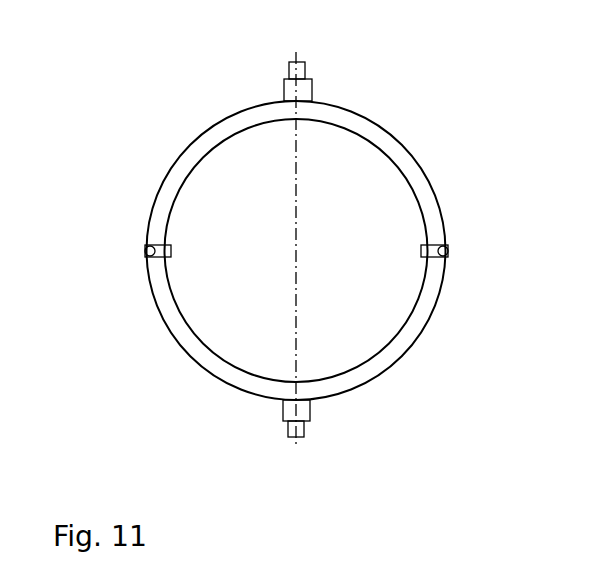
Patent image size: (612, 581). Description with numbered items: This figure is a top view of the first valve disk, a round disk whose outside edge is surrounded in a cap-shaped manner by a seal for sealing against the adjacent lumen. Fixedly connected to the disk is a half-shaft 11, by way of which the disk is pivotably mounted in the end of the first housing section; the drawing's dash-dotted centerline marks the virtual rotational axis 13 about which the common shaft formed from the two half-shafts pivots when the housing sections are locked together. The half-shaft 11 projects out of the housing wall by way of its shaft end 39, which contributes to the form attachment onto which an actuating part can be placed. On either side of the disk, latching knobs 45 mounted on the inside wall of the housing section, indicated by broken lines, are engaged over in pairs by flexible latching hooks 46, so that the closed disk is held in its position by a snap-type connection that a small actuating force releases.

The half-shaft 11 is at (307, 83).
The virtual rotational axis 13 is at (294, 189).
The latching knob 45 is at (147, 258).
The latching hook 46 is at (152, 245).
The shaft end 39 is at (302, 412).